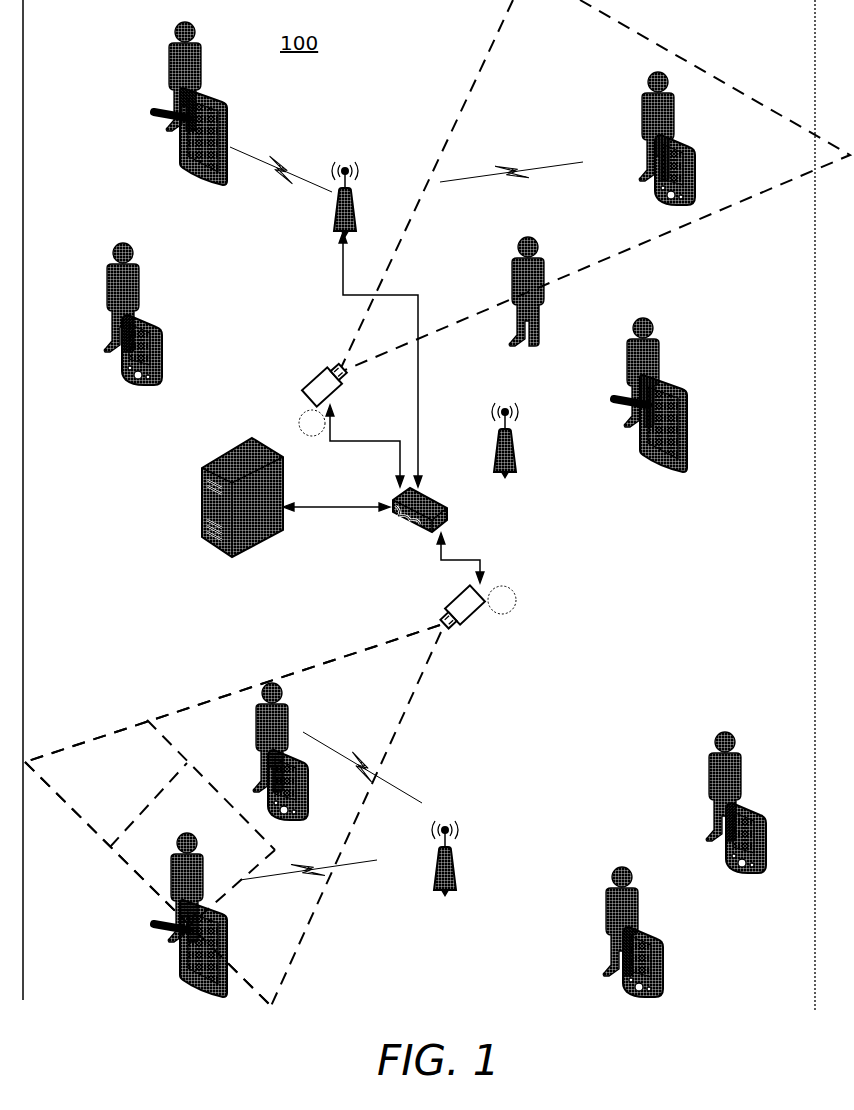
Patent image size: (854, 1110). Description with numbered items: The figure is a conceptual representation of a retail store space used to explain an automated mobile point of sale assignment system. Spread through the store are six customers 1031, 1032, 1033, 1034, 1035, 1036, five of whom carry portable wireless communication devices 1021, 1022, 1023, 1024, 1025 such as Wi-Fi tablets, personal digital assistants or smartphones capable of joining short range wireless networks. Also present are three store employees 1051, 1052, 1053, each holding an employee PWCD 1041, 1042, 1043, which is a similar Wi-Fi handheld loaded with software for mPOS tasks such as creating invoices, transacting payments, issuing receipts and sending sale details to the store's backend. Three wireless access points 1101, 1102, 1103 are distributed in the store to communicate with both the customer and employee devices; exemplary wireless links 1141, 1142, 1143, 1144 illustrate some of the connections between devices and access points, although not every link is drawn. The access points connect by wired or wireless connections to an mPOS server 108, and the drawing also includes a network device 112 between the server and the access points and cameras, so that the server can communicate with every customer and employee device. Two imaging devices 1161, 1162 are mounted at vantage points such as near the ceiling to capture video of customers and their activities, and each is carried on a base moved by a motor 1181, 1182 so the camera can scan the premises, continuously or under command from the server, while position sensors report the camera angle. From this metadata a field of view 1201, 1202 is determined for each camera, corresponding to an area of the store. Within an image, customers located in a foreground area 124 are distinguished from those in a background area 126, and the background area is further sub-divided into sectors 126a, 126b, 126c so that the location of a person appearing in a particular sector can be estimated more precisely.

The portable wireless communication device 1021 is at (695, 172).
The portable wireless communication device 1022 is at (164, 352).
The portable wireless communication device 1023 is at (310, 786).
The portable wireless communication device 1024 is at (665, 965).
The portable wireless communication device 1025 is at (769, 840).
The customer 1031 is at (680, 110).
The customer 1032 is at (143, 284).
The customer 1033 is at (288, 716).
The customer 1034 is at (636, 898).
The customer 1035 is at (745, 764).
The customer 1036 is at (548, 276).
The employee PWCD 1041 is at (230, 124).
The employee PWCD 1042 is at (690, 416).
The employee PWCD 1043 is at (231, 943).
The store employee 1051 is at (203, 52).
The store employee 1052 is at (666, 346).
The store employee 1053 is at (203, 864).
The mPOS server 108 is at (200, 518).
The wireless access point 1101 is at (356, 208).
The wireless access point 1102 is at (514, 452).
The wireless access point 1103 is at (433, 872).
The router 112 is at (428, 540).
The wireless link 1141 is at (512, 166).
The wireless link 1142 is at (286, 183).
The wireless link 1143 is at (364, 762).
The wireless link 1144 is at (303, 865).
The imaging device 1161 is at (312, 380).
The imaging device 1162 is at (477, 623).
The motor 1181 is at (300, 420).
The motor 1182 is at (504, 585).
The field of view 1201 is at (484, 68).
The field of view 1202 is at (178, 692).
The foreground area 124 is at (331, 661).
The background area 126 is at (90, 735).
The sector 126a is at (106, 783).
The sector 126b is at (192, 844).
The sector 126c is at (294, 819).